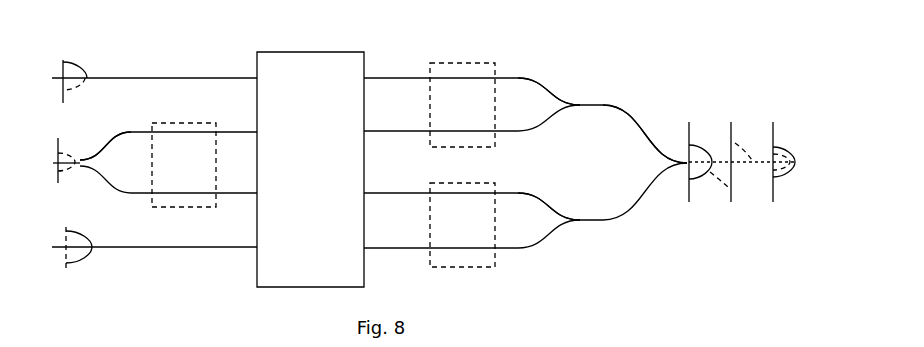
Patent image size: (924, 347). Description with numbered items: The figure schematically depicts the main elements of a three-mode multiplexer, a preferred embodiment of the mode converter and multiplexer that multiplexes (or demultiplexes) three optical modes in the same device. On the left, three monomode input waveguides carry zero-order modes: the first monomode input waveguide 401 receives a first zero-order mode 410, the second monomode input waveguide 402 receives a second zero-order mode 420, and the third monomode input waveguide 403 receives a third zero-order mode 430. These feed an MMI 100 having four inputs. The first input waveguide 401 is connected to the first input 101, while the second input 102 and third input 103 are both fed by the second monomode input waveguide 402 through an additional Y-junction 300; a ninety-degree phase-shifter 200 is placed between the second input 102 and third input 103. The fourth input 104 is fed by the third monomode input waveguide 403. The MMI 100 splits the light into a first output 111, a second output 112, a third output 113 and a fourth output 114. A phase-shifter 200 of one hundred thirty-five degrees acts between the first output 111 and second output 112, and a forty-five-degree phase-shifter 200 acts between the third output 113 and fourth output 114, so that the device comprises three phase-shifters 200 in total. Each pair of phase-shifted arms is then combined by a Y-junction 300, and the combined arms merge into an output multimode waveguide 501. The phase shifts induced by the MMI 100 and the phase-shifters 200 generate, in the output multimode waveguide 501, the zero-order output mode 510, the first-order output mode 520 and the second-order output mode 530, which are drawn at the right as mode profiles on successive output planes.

The MMI 100 is at (297, 52).
The first input 101 is at (224, 247).
The second input 102 is at (224, 193).
The third input 103 is at (224, 132).
The fourth input 104 is at (224, 78).
The first output 111 is at (370, 78).
The second output 112 is at (370, 131).
The third output 113 is at (370, 193).
The fourth output 114 is at (370, 248).
The phase-shifter 200 is at (166, 123).
The Y-junction 300 is at (106, 143).
The first monomode input waveguide 401 is at (64, 246).
The second monomode input waveguide 402 is at (56, 163).
The third monomode input waveguide 403 is at (61, 76).
The first zero-order mode 410 is at (77, 233).
The second zero-order mode 420 is at (67, 177).
The third zero-order mode 430 is at (66, 63).
The output multimode waveguide 501 is at (793, 160).
The zero-order output mode 510 is at (690, 128).
The first-order output mode 520 is at (732, 128).
The second-order output mode 530 is at (774, 128).